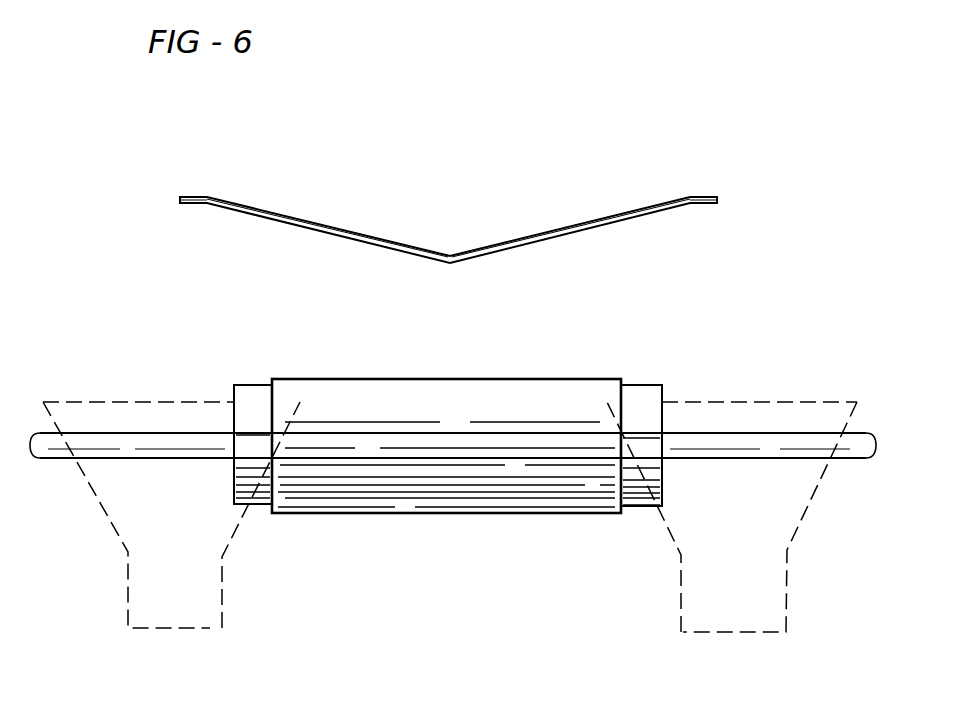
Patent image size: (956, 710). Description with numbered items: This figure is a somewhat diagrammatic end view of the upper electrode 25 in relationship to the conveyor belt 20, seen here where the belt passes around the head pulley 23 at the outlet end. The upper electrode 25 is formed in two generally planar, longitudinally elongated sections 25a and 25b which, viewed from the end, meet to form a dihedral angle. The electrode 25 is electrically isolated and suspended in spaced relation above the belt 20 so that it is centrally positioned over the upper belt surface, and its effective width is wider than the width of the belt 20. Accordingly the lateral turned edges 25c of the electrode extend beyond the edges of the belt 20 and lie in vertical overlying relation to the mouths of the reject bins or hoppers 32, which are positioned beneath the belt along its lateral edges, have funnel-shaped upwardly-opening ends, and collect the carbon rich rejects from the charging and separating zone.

The belt 20 is at (553, 378).
The head pulley 23 is at (650, 388).
The upper electrode 25 is at (455, 255).
The planar section 25a is at (557, 228).
The planar section 25b is at (303, 218).
The lateral turned edges 25c is at (194, 198).
The reject bins or hoppers 32 is at (681, 587).